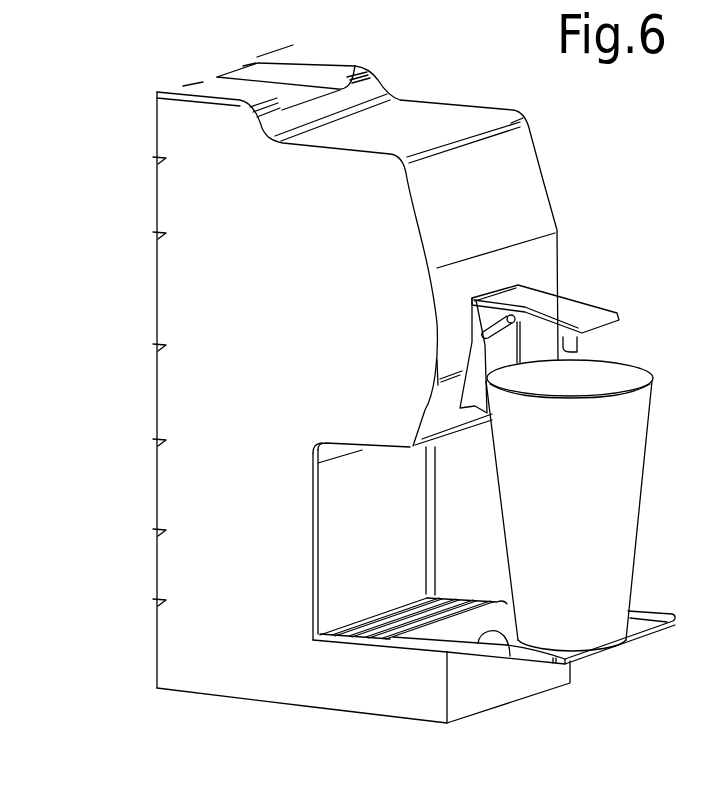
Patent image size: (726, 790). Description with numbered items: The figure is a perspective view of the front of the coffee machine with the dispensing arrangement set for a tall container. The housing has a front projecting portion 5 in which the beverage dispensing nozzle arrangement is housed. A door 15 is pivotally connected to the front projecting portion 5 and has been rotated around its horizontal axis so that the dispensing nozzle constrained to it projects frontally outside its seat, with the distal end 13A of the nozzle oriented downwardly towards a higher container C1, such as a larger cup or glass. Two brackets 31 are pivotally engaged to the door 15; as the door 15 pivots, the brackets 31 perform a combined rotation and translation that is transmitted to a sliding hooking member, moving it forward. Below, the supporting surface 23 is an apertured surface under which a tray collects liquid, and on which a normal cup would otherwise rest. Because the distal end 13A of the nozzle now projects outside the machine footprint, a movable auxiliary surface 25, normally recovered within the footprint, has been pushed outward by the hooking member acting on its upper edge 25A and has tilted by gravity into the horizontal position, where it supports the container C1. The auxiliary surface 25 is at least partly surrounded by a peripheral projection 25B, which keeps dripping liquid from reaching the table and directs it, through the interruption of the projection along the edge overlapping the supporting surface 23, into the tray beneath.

The front projecting portion 5 is at (525, 184).
The door 15 is at (538, 298).
The brackets 31 is at (485, 333).
The distal end of the beverage dispensing nozzle 13A is at (577, 350).
The container C1 is at (624, 474).
The supporting surface 23 is at (447, 600).
The movable auxiliary surface 25 is at (634, 620).
The upper edge of the movable auxiliary surface 25A is at (613, 643).
The peripheral projection 25B is at (510, 656).